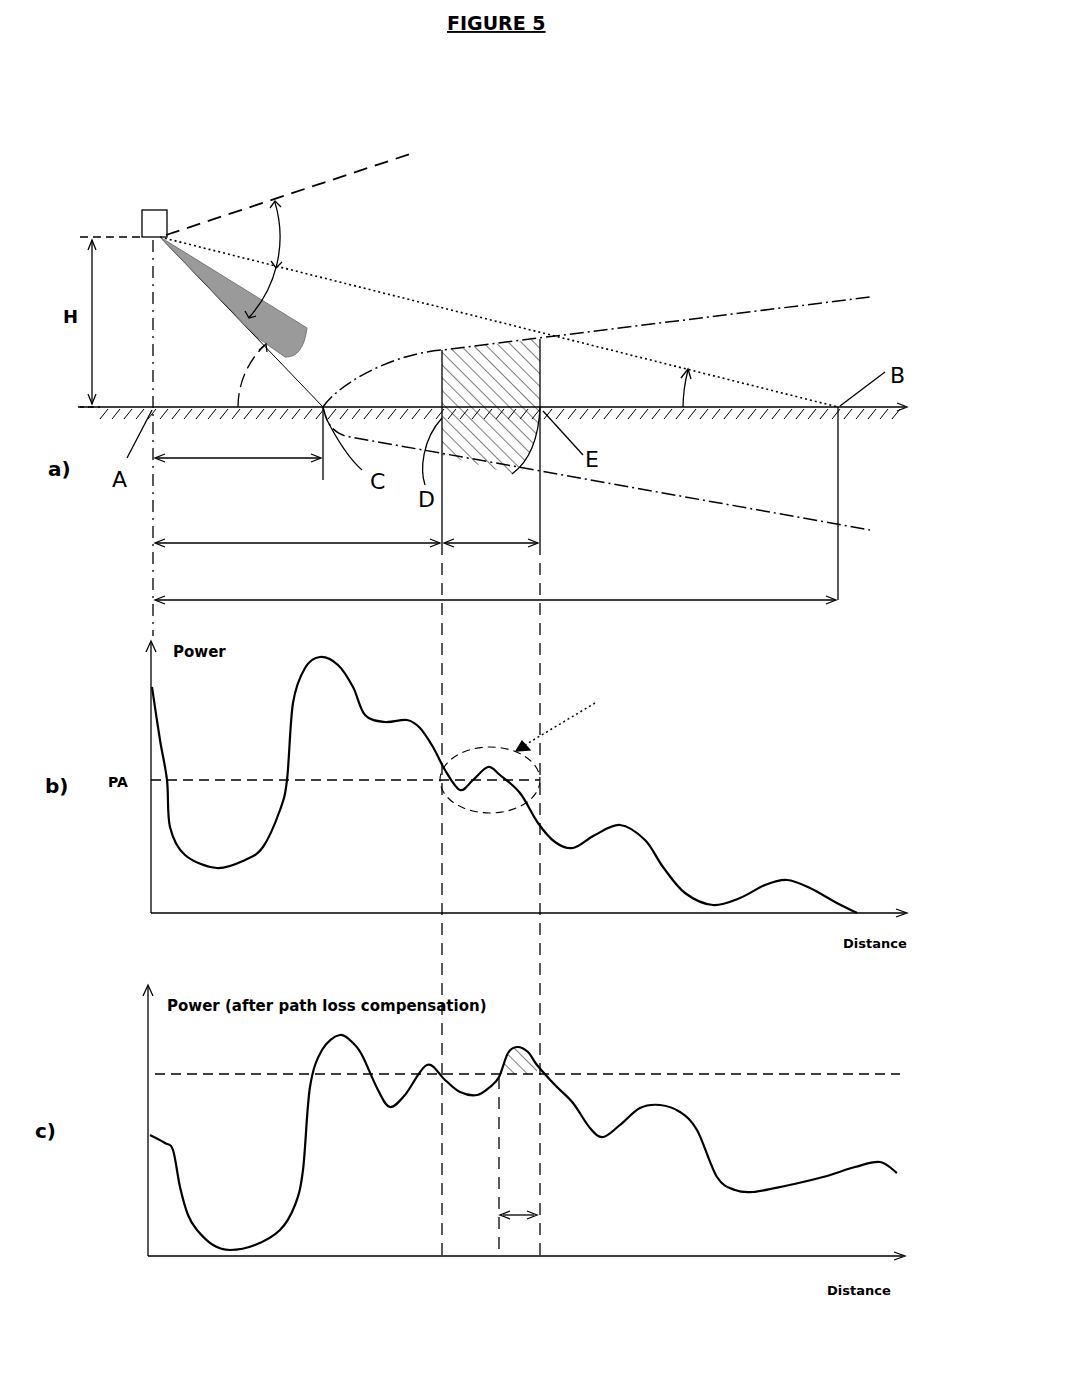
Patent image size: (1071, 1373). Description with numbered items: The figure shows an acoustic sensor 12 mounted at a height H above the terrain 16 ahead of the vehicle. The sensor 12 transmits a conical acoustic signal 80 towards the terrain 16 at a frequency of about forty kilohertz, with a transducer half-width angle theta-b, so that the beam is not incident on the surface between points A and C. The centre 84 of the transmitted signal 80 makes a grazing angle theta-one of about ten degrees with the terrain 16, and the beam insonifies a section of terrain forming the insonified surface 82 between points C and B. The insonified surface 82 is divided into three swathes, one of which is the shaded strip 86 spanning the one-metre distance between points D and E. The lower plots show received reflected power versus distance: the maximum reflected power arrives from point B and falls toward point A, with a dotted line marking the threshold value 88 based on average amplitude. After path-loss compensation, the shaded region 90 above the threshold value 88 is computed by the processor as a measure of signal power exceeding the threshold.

In FIG. 5a, the acoustic sensor 12 is at (157, 208).
In FIG. 5a, the terrain 16 is at (892, 253).
In FIG. 5a, the acoustic signal 80 is at (417, 230).
In FIG. 5a, the insonified surface 82 is at (776, 308).
In FIG. 5a, the centre of the transmitted signal 84 is at (405, 298).
In FIG. 5a, the shaded strip 86 is at (514, 364).
In FIG. 5b, the threshold value 88 is at (222, 780).
In FIG. 5c, the threshold value 88 is at (230, 1075).
In FIG. 5c, the shaded region 90 is at (532, 1045).